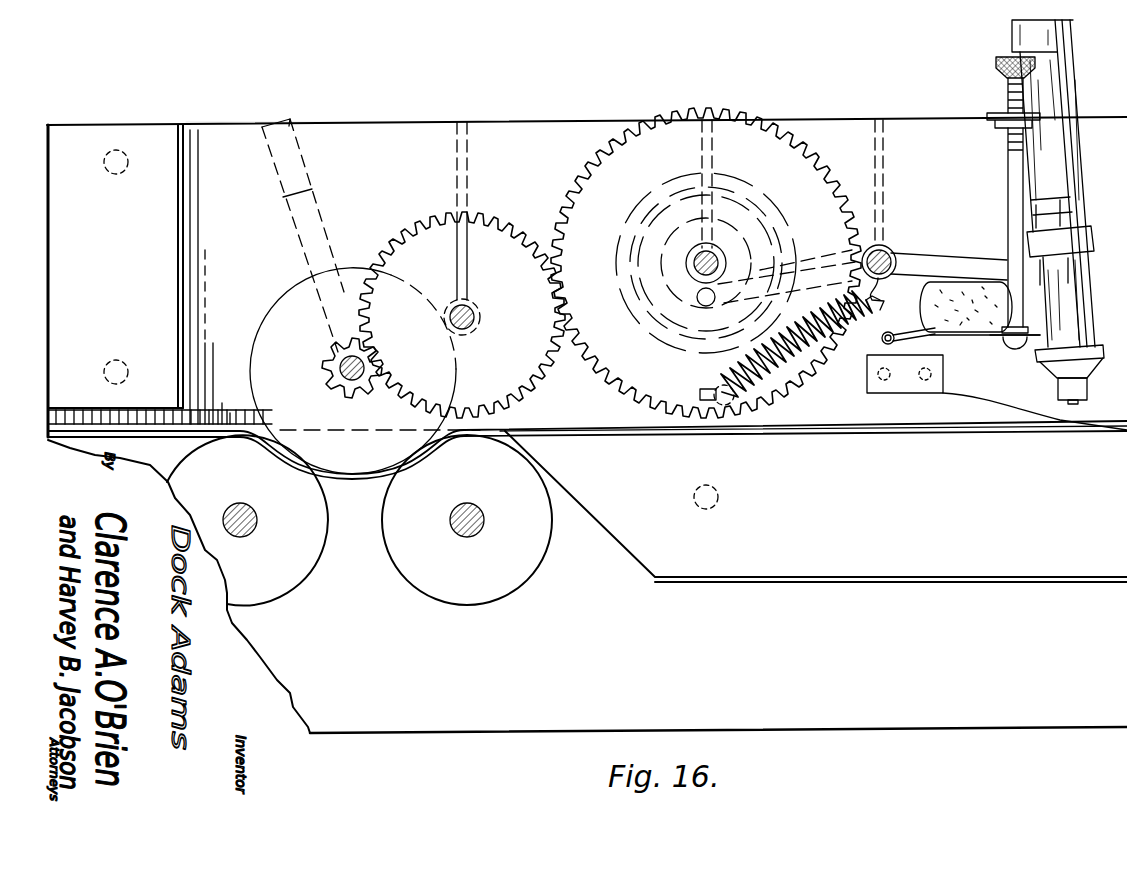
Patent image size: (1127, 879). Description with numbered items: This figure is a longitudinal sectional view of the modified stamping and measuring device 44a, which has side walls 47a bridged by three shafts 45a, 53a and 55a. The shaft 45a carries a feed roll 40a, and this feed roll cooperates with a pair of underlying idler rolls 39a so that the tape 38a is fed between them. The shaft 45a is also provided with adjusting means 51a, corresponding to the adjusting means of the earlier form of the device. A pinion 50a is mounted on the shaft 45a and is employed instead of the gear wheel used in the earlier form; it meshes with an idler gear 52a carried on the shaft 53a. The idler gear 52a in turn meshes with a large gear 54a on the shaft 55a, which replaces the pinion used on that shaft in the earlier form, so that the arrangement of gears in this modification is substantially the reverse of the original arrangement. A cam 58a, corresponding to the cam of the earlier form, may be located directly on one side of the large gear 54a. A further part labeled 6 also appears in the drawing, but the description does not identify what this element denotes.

The tape 38a is at (623, 436).
The idler rolls 39a is at (283, 588).
The feed roll 40a is at (278, 305).
The modified stamping and measuring device 44a is at (517, 119).
The shaft 45a is at (335, 365).
The side walls 47a is at (375, 142).
The pinion 50a is at (332, 385).
The adjusting means 51a is at (320, 223).
The idler gear 52a is at (497, 217).
The shaft 53a is at (478, 321).
The large gear 54a is at (637, 128).
The shaft 55a is at (722, 257).
The cam 58a is at (738, 197).
The tube 6 is at (1096, 170).